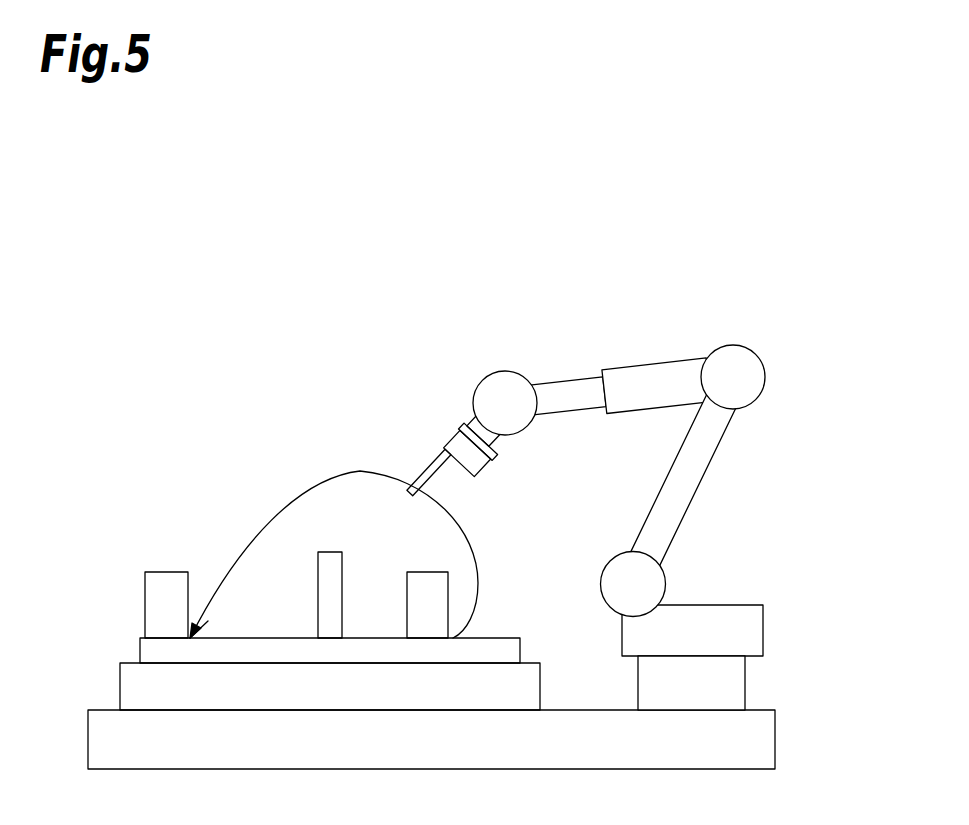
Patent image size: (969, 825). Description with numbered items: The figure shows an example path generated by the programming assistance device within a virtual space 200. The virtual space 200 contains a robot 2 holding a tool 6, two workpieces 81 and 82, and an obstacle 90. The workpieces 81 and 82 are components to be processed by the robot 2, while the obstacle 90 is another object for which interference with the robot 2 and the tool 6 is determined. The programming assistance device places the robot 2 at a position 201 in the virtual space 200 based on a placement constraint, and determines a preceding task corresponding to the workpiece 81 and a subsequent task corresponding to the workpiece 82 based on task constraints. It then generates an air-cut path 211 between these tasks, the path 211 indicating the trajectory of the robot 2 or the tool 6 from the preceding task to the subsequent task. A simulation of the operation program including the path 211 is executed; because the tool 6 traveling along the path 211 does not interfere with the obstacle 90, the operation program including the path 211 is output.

The virtual space 200 is at (305, 287).
The position 201 is at (747, 708).
The robot 2 is at (655, 364).
The tool 6 is at (425, 461).
The path 211 is at (337, 471).
The workpiece 81 is at (407, 625).
The workpiece 82 is at (163, 572).
The obstacle 90 is at (320, 573).